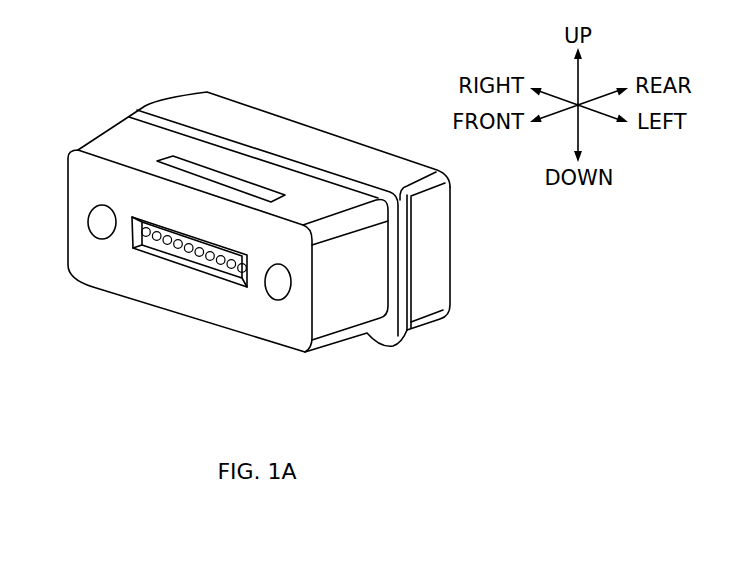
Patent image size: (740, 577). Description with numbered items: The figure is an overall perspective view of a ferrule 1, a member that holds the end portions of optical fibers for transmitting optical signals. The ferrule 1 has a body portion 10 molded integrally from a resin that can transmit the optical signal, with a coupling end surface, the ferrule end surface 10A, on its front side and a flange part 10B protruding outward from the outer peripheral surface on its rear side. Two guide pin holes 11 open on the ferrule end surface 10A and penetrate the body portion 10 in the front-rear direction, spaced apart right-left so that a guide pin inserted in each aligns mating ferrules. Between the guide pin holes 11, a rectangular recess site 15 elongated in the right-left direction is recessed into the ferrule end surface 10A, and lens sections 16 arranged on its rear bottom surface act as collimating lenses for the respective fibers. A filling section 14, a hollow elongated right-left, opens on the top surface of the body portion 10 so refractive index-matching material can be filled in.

The ferrule 1 is at (241, 212).
The body portion 10 is at (262, 257).
The ferrule end surface 10A is at (132, 272).
The flange part 10B is at (398, 345).
The guide pin holes 11 is at (103, 226).
The filling section 14 is at (170, 158).
The recess site 15 is at (168, 266).
The lens sections 16 is at (217, 260).